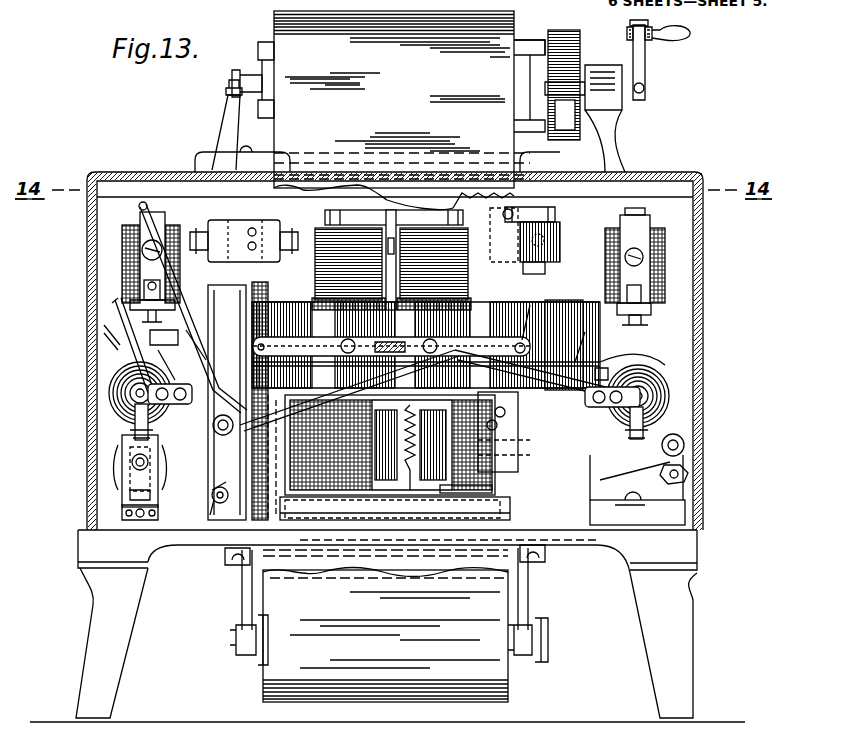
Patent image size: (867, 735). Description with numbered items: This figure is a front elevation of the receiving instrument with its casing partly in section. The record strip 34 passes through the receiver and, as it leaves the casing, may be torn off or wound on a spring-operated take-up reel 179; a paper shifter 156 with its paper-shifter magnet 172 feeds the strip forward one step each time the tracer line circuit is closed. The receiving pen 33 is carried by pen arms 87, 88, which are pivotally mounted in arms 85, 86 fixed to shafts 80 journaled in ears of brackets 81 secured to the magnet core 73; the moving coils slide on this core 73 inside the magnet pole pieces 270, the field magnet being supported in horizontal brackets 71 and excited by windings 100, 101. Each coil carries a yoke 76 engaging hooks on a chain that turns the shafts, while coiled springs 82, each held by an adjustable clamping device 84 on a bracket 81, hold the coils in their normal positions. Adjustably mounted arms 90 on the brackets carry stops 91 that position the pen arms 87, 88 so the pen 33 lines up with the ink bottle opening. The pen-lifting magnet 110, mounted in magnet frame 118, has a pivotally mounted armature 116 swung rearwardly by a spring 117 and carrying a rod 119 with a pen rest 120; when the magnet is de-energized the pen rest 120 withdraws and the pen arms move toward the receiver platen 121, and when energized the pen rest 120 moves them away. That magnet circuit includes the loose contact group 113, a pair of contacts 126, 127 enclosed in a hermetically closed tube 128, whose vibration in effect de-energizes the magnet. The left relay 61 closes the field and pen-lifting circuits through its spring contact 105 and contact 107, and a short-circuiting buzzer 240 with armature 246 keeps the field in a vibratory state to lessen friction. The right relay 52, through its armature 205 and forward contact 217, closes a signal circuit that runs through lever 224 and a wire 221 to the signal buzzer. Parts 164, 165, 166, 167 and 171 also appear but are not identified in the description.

The record strip 34 is at (402, 110).
The spring-operated take-up reel 179 is at (530, 50).
The left relay 61 is at (122, 262).
The contact 107 is at (146, 286).
The wire 221 is at (244, 231).
The paper shifter 156 is at (394, 207).
The paper shifter magnet 172 is at (316, 272).
The coil 167 is at (352, 330).
The center core rod 171 is at (465, 300).
The contact 127 is at (500, 213).
The hermetically closed tube 128 is at (548, 206).
The contact 126 is at (560, 222).
The loose contact group 113 is at (570, 206).
The right relay 52 is at (660, 270).
The forward contact 217 is at (650, 313).
The armature 205 is at (648, 326).
The frame post 165 is at (222, 300).
The frame post 164 is at (258, 290).
The winding of field magnet 101 is at (426, 361).
The pen arm 88 is at (186, 296).
The adjustably mounted arm 90 is at (120, 312).
The stop 91 is at (108, 302).
The arm 86 is at (104, 335).
The spring contact 105 is at (159, 333).
The magnet core 73 is at (391, 337).
The magnet pole pieces 270 is at (210, 350).
The yoke 76 is at (635, 348).
The arm 85 is at (588, 348).
The horizontal brackets 71 is at (524, 315).
The coil frame 166 is at (548, 300).
The shaft 80 is at (136, 388).
The coiled spring 82 is at (108, 404).
The bracket 81 is at (700, 418).
The clamping device 84 is at (132, 438).
The short-circuiting buzzer 240 is at (122, 466).
The armature 246 is at (130, 470).
The receiving pen 33 is at (225, 435).
The pen arm 87 is at (268, 440).
The winding of field magnet 100 is at (390, 445).
The armature 116 is at (372, 490).
The spring 117 is at (408, 480).
The magnet frame 118 is at (434, 490).
The pen-lifting magnet 110 is at (460, 490).
The receiver platen 121 is at (520, 466).
The rod 119 is at (518, 405).
The pen rest 120 is at (500, 428).
The lever 224 is at (686, 462).